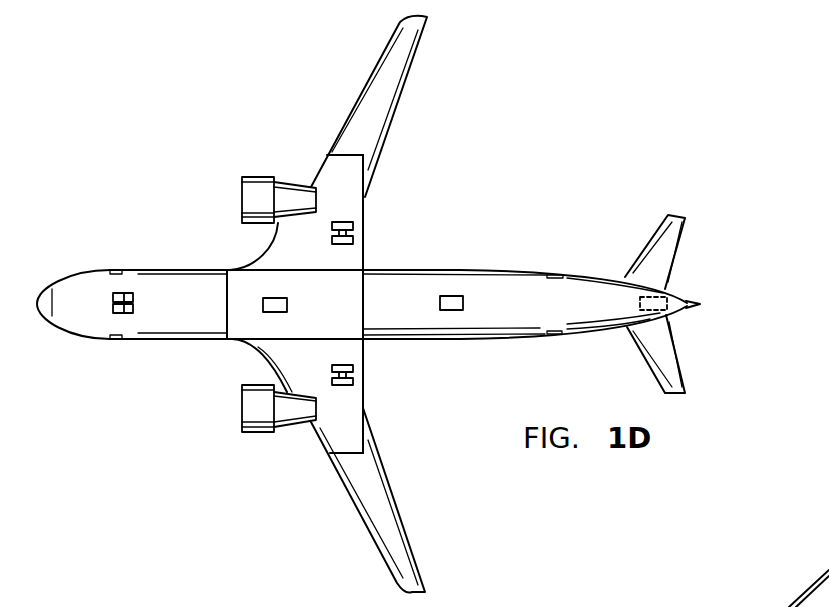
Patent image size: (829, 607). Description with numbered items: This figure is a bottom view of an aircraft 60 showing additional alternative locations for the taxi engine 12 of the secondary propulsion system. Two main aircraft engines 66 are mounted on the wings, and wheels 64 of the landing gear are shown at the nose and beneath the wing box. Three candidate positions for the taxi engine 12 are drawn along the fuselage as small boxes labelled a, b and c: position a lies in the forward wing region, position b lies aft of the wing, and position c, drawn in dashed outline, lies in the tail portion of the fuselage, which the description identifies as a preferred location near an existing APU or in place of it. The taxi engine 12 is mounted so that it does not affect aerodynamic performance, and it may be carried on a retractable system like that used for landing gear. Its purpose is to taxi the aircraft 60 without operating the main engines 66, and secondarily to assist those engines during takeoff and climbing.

The aircraft 60 is at (410, 267).
The main aircraft engine 66 is at (263, 175).
The wheels 64 is at (120, 315).
The taxi engine 12 is at (452, 314).
The location a is at (267, 300).
The location b is at (460, 299).
The location c is at (665, 299).